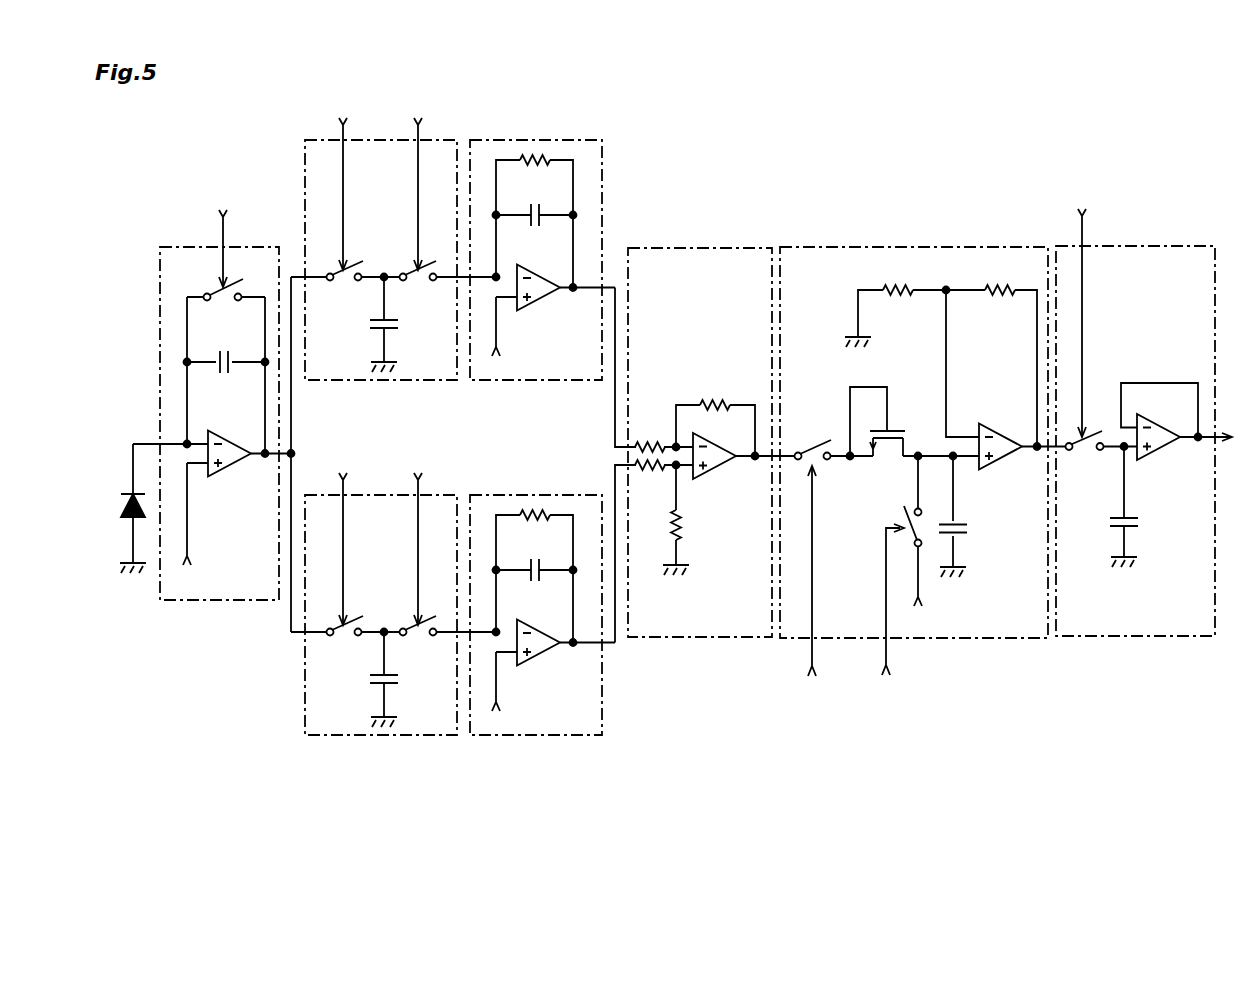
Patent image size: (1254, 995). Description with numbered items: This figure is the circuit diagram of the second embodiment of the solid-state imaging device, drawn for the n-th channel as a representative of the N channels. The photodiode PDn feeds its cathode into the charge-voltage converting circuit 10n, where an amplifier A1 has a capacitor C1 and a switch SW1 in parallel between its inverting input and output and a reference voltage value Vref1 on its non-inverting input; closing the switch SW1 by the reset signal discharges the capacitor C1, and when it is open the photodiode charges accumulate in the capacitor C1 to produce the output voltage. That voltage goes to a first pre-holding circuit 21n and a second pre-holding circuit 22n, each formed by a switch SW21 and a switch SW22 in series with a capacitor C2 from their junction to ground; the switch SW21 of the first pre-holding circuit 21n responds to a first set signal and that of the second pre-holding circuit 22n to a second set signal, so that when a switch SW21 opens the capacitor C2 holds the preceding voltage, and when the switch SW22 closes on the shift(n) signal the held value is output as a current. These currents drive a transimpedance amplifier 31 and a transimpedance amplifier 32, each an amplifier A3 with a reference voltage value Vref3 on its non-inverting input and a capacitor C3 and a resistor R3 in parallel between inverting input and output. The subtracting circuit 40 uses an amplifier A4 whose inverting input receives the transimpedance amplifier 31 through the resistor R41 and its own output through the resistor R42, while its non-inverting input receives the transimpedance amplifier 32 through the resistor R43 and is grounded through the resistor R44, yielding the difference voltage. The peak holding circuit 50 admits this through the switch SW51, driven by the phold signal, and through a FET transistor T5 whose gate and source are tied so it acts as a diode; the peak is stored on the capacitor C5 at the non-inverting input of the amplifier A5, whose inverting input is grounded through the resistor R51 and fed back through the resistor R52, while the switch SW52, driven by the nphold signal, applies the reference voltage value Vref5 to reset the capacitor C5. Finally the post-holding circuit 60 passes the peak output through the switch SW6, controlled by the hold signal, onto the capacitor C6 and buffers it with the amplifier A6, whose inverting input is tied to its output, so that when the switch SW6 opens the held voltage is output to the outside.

The charge-voltage converting circuit 10n is at (253, 600).
The first pre-holding circuit 21n is at (418, 380).
The second pre-holding circuit 22n is at (418, 735).
The transimpedance amplifier 31 is at (555, 380).
The transimpedance amplifier 32 is at (555, 735).
The subtracting circuit 40 is at (730, 637).
The peak holding circuit 50 is at (1000, 638).
The post-holding circuit 60 is at (1175, 636).
The photodiode PDn is at (127, 505).
The switch SW1 is at (226, 304).
The capacitor C1 is at (226, 375).
The amplifier A1 is at (230, 462).
The reference voltage value Vref1 is at (194, 529).
The switch SW21 is at (341, 463).
The switch SW22 is at (421, 463).
The capacitor C2 is at (399, 501).
The resistor R3 is at (534, 399).
The capacitor C3 is at (535, 404).
The amplifier A3 is at (543, 469).
The reference voltage value Vref3 is at (505, 513).
The resistor R41 is at (653, 434).
The resistor R42 is at (715, 417).
The resistor R43 is at (653, 477).
The resistor R44 is at (693, 520).
The amplifier A4 is at (717, 462).
The switch SW51 is at (811, 438).
The FET transistor T5 is at (877, 435).
The switch SW52 is at (881, 501).
The resistor R51 is at (895, 316).
The resistor R52 is at (991, 366).
The capacitor C5 is at (970, 516).
The amplifier A5 is at (1002, 454).
The reference voltage value Vref5 is at (924, 587).
The switch SW6 is at (1083, 451).
The amplifier A6 is at (1161, 423).
The capacitor C6 is at (1140, 507).